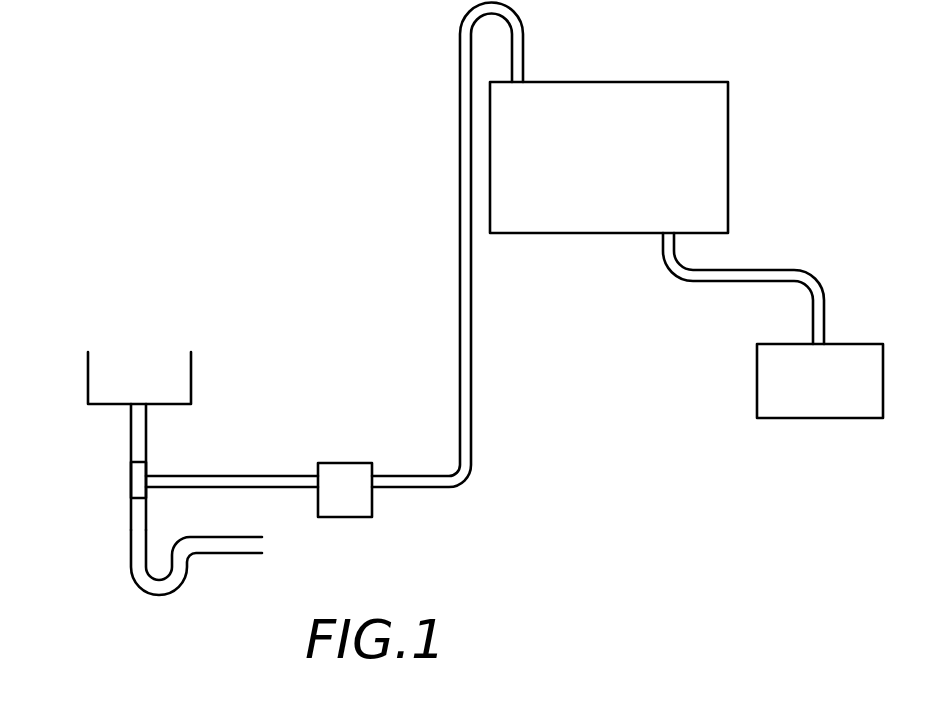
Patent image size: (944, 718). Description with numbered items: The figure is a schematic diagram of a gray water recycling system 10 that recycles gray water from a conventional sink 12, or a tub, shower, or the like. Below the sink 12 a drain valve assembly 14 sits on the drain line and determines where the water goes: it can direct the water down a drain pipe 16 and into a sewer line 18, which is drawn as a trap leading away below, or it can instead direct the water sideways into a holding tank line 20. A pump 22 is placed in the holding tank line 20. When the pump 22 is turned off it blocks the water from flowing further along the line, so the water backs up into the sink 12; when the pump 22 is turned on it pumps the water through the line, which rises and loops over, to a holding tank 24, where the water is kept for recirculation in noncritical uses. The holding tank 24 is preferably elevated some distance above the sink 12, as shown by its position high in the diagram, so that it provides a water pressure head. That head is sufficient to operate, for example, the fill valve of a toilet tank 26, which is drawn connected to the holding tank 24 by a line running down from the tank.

The gray water recycling system 10 is at (632, 550).
The sink 12 is at (88, 383).
The drain valve assembly 14 is at (135, 483).
The drain pipe 16 is at (131, 437).
The sewer line 18 is at (226, 553).
The holding tank line 20 is at (218, 476).
The pump 22 is at (350, 517).
The holding tank 24 is at (728, 130).
The toilet tank 26 is at (757, 372).